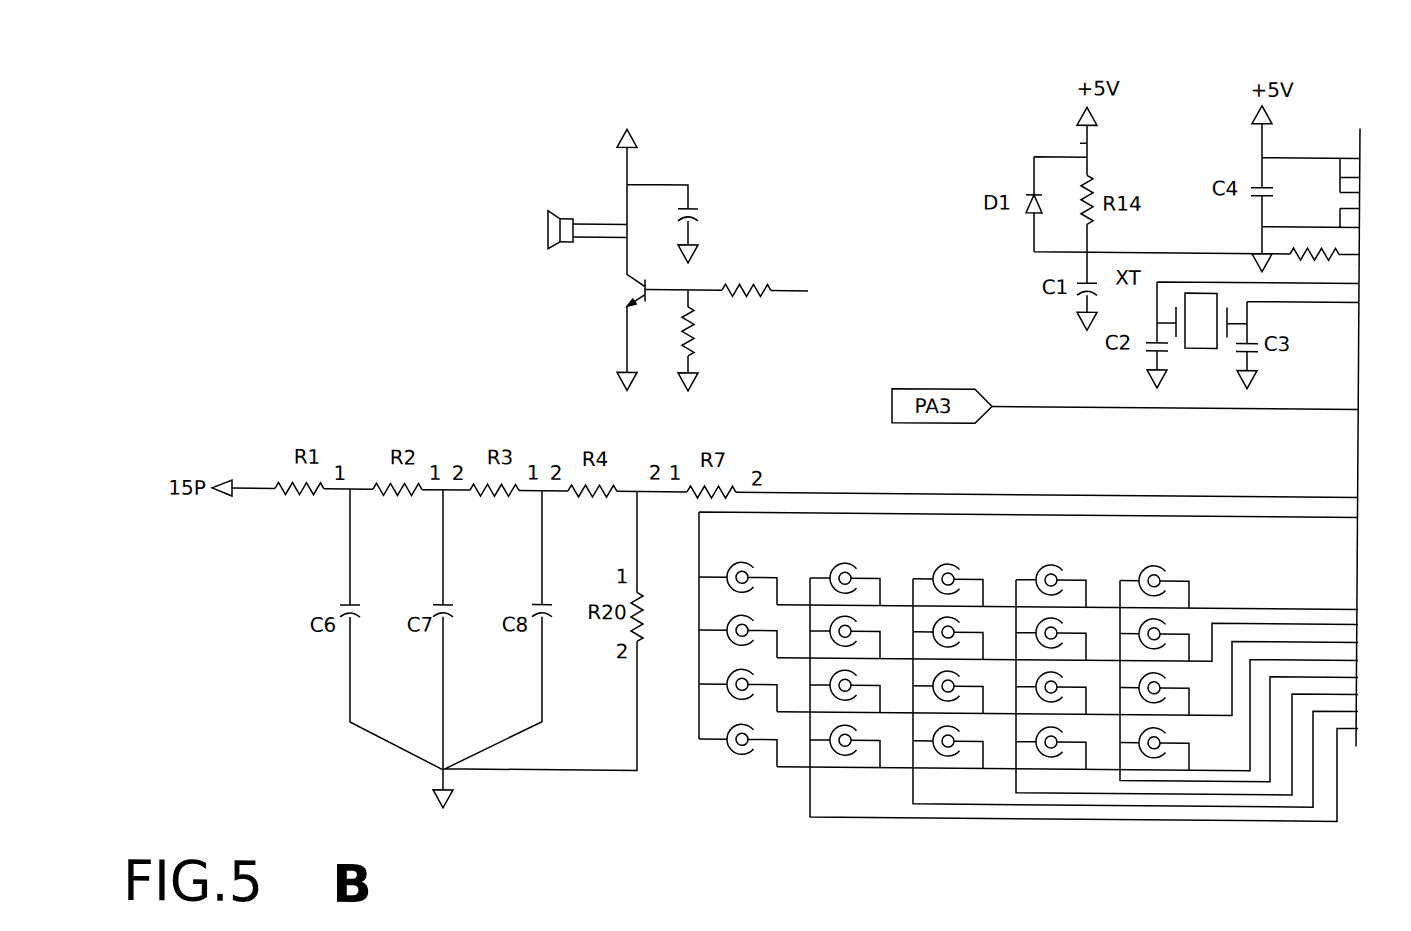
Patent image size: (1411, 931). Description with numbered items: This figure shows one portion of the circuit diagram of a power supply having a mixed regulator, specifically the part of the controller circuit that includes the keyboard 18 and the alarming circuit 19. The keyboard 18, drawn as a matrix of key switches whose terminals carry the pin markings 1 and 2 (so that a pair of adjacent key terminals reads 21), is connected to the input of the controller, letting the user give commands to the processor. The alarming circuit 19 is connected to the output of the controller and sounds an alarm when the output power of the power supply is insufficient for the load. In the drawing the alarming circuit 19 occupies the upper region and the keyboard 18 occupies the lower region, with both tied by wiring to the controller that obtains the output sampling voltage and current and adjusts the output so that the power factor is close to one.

The keyboard 18 is at (975, 826).
The alarming circuit 19 is at (707, 145).
The key switch 21 is at (766, 583).
The terminal 1 is at (282, 477).
The terminal 2 is at (390, 478).